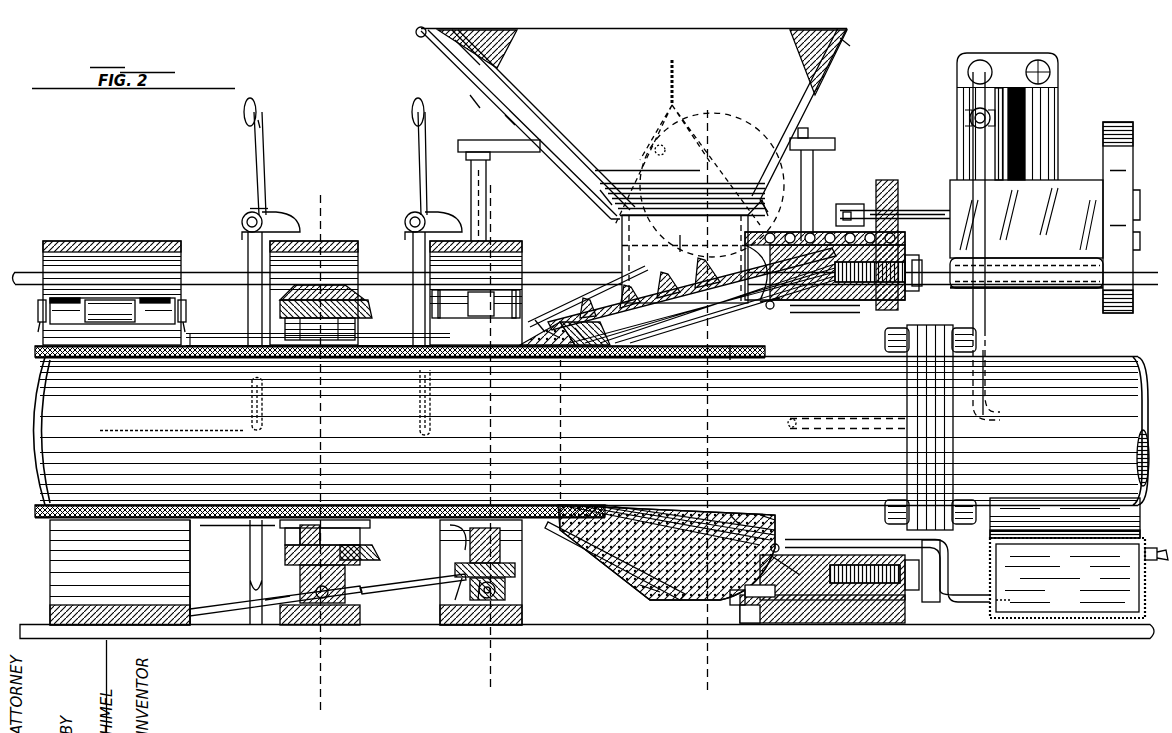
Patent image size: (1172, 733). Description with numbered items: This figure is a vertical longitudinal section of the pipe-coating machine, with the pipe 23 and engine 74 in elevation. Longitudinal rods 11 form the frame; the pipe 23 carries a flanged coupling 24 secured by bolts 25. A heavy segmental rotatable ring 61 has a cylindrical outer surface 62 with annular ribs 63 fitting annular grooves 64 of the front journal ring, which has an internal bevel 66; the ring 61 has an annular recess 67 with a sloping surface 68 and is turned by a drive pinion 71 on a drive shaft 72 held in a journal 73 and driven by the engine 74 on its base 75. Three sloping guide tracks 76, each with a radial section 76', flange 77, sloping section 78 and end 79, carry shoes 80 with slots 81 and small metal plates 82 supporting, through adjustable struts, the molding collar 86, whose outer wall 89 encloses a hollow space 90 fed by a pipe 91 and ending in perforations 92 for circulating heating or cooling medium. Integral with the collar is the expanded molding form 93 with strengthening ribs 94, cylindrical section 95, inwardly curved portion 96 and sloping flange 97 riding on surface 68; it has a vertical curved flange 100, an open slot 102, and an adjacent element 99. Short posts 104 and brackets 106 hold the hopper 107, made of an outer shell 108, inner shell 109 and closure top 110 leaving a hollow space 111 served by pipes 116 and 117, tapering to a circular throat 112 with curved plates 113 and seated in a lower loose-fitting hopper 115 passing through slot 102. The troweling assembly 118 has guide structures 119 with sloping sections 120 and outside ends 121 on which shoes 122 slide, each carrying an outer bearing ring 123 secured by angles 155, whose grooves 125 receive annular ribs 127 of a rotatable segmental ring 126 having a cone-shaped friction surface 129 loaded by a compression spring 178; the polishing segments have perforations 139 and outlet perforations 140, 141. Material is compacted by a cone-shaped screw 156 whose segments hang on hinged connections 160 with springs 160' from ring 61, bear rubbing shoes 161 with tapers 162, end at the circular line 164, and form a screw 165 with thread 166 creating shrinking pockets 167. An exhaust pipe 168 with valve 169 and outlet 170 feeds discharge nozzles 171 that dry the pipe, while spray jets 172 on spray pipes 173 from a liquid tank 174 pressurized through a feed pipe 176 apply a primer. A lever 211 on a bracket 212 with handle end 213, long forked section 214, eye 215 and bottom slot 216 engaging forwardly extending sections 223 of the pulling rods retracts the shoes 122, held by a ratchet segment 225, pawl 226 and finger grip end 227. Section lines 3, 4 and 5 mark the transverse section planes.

The longitudinal rods 11 is at (1085, 627).
The pipe 23 is at (1090, 418).
The flanged coupling 24 is at (914, 402).
The bolts 25 is at (984, 339).
The segmental rotatable ring 61 is at (852, 605).
The cylindrical outer surface 62 is at (822, 615).
The annular ribs 63 is at (798, 620).
The annular grooves 64 is at (776, 622).
The internal bevel 66 is at (758, 618).
The annular recess 67 is at (770, 256).
The sloping surface 68 is at (812, 252).
The drive pinion 71 is at (887, 182).
The drive shaft 72 is at (928, 214).
The journal 73 is at (846, 206).
The engine 74 is at (1075, 104).
The base 75 is at (1025, 277).
The sloping guide tracks 76 is at (360, 625).
The radial section 76' is at (518, 585).
The flange 77 is at (522, 600).
The sloping section 78 is at (398, 596).
The end 79 is at (358, 622).
The shoe 80 is at (482, 594).
The slot 81 is at (465, 592).
The small metal plate 82 is at (515, 568).
The molding collar 86 is at (490, 343).
The outer wall 89 is at (537, 322).
The hollow space 90 is at (475, 331).
The pipe 91 is at (541, 326).
The perforations 92 is at (432, 372).
The expanded molding form 93 is at (655, 594).
The strengthening ribs 94 is at (620, 560).
The cylindrical section 95 is at (702, 598).
The inwardly curved portion 96 is at (770, 556).
The sloping flange 97 is at (800, 572).
The arm 99 is at (580, 328).
The vertical curved flange 100 is at (622, 258).
The open slot 102 is at (755, 236).
The short posts 104 is at (810, 178).
The brackets 106 is at (825, 140).
The hopper 107 is at (470, 98).
The outer shell 108 is at (508, 118).
The inner shell 109 is at (515, 105).
The closure top 110 is at (418, 36).
The hollow space 111 is at (470, 60).
The circular throat 112 is at (628, 200).
The curved plates 113 is at (602, 172).
The lower loose-fitting hopper 115 is at (588, 197).
The pipe 116 is at (655, 145).
The pipe 117 is at (845, 40).
The surface finishing assembly 118 is at (236, 304).
The guide structures 119 is at (229, 620).
The sloping section 120 is at (242, 602).
The outside end 121 is at (155, 605).
The shoe 122 is at (305, 626).
The outer bearing ring 123 is at (318, 298).
The grooves 125 is at (365, 556).
The rotatable segmental ring 126 is at (350, 287).
The annular ribs 127 is at (283, 548).
The cone-shaped friction surface 129 is at (360, 306).
The perforations 139 is at (356, 338).
The outlet perforations 140 is at (185, 340).
The outlet perforations 141 is at (205, 333).
The angles 155 is at (284, 556).
The cone-shaped screw 156 is at (734, 353).
The hinged connection 160 is at (786, 320).
The spring 160' is at (806, 509).
The rubbing shoe 161 is at (570, 350).
The taper 162 is at (592, 350).
The circular line 164 is at (560, 424).
The screw 165 is at (684, 244).
The thread 166 is at (626, 310).
The pockets 167 is at (650, 340).
The exhaust pipe 168 is at (990, 348).
The valve 169 is at (990, 112).
The outlet 170 is at (970, 118).
The discharge nozzles 171 is at (818, 426).
The spray jets 172 is at (732, 512).
The spray pipes 173 is at (845, 546).
The liquid tank 174 is at (1002, 558).
The feed pipe 176 is at (1156, 546).
The compression spring 178 is at (832, 312).
The lever 211 is at (241, 244).
The bracket 212 is at (275, 214).
The handle end 213 is at (251, 178).
The long section 214 is at (247, 430).
The eye 215 is at (263, 418).
The slot 216 is at (253, 622).
The forwardly extending sections 223 is at (275, 620).
The ratchet segment 225 is at (250, 208).
The pawl 226 is at (264, 137).
The finger grip end 227 is at (262, 106).
The section line 3 is at (714, 693).
The section line 4 is at (497, 693).
The section line 5 is at (327, 717).